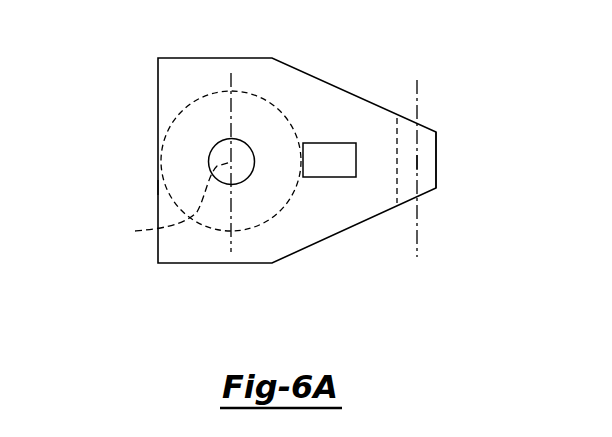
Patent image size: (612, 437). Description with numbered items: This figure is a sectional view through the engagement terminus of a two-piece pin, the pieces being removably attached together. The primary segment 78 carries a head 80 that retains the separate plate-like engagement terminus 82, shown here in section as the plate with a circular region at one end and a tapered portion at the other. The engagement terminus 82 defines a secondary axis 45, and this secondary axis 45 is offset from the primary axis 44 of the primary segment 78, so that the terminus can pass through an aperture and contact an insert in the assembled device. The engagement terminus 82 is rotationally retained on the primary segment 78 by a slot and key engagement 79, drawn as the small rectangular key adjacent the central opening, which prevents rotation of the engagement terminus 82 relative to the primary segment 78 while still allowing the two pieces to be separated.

The primary axis 44 is at (171, 201).
The secondary axis 45 is at (418, 162).
The primary segment 78 is at (219, 139).
The slot and key engagement 79 is at (332, 152).
The head 80 is at (160, 187).
The engagement terminus 82 is at (426, 134).